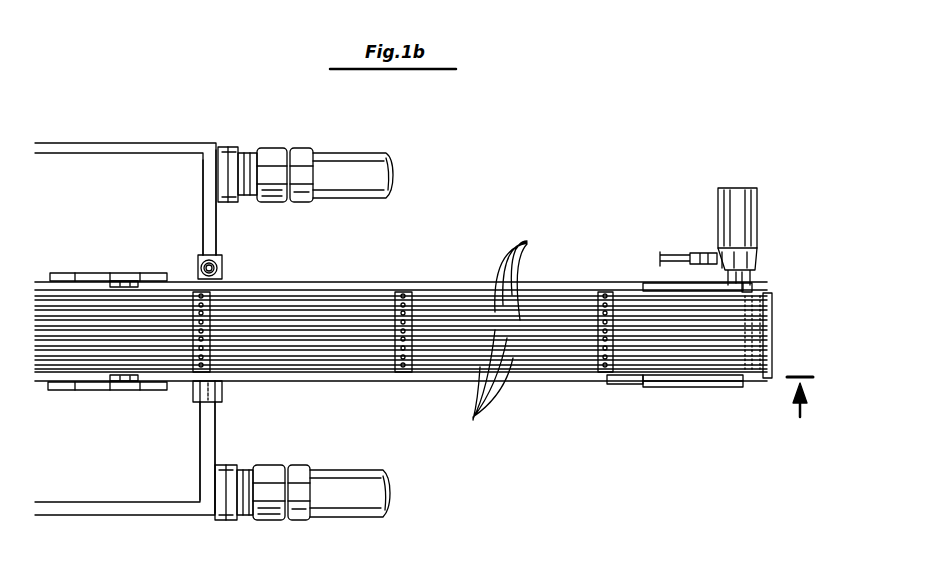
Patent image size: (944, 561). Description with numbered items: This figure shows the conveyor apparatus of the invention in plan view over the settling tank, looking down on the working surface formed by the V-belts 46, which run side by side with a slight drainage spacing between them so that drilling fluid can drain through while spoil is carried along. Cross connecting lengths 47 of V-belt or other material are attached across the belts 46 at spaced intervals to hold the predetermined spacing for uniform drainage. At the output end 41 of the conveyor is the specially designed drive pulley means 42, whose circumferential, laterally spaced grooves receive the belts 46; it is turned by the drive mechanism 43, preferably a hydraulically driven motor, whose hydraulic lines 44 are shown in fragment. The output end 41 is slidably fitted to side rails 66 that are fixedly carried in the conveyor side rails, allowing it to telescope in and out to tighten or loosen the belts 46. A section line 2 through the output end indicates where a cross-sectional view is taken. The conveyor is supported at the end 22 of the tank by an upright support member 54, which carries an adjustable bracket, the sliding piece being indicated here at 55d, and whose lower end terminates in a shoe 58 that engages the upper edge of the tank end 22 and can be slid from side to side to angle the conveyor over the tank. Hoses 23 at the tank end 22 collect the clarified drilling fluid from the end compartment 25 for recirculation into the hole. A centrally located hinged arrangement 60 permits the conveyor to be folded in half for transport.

The section line 2 is at (800, 385).
The end of tank 22 is at (218, 236).
The hoses 23 is at (367, 153).
The end compartment 25 is at (120, 476).
The output end 41 is at (740, 393).
The drive pulley means 42 is at (769, 290).
The drive mechanism 43 is at (757, 216).
The hydraulic lines 44 is at (700, 253).
The V-belts 46 is at (499, 333).
The cross connecting lengths 47 is at (407, 292).
The upright support member 54 is at (222, 266).
The pivot pin 55d is at (198, 262).
The shoe 58 is at (222, 400).
The hinged arrangement 60 is at (119, 262).
The side rails 66 is at (628, 379).